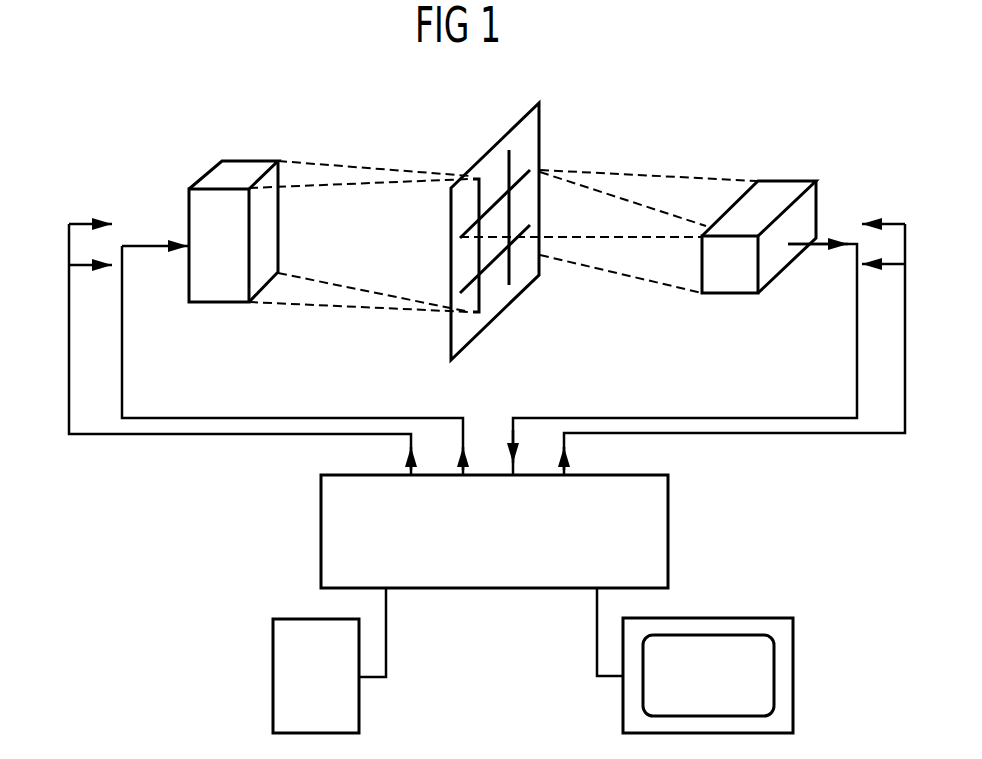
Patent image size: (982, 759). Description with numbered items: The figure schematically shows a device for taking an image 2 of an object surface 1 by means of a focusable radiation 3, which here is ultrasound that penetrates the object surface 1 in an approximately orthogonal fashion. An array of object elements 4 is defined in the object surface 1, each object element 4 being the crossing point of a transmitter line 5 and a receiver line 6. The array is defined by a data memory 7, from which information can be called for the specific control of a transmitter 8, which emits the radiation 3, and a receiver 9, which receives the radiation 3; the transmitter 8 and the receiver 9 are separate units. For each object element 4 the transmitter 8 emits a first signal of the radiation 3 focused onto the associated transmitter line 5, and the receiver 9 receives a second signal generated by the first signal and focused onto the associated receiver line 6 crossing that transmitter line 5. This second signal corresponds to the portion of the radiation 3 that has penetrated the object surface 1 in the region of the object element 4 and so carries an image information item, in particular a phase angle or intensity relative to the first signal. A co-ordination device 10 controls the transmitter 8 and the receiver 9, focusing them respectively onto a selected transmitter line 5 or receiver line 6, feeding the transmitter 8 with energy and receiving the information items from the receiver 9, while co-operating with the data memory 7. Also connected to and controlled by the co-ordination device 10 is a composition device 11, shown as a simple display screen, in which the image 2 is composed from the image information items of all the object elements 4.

The object surface 1 is at (540, 128).
The image 2 is at (715, 645).
The focusable radiation 3 is at (317, 185).
The object element 4 is at (472, 218).
The transmitter line 5 is at (492, 193).
The receiver line 6 is at (525, 172).
The data memory 7 is at (286, 620).
The transmitter 8 is at (233, 173).
The receiver 9 is at (778, 195).
The co-ordination device 10 is at (668, 508).
The composition device 11 is at (777, 620).